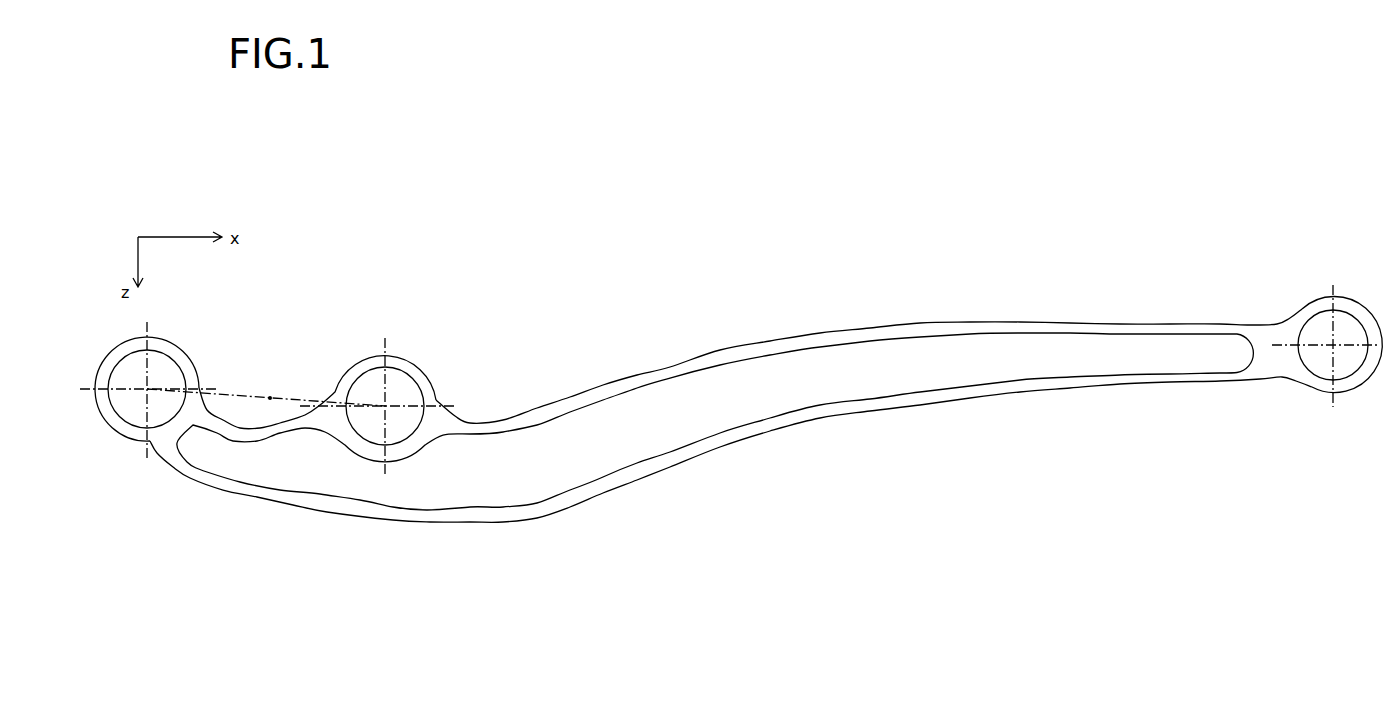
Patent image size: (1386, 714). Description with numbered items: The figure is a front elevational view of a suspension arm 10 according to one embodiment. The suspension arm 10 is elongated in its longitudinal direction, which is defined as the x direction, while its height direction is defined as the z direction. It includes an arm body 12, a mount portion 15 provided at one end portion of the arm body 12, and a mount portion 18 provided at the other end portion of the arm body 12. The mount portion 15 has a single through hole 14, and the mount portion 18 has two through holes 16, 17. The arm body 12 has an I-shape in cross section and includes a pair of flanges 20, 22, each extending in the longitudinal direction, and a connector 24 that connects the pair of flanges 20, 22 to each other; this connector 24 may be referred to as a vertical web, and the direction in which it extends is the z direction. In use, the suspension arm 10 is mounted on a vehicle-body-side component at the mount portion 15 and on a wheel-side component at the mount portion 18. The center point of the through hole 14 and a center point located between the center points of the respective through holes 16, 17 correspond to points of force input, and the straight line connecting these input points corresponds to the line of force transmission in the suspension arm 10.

The suspension arm 10 is at (692, 272).
The arm body 12 is at (570, 385).
The through hole 14 is at (1298, 332).
The mount portion 15 is at (1316, 280).
The through hole 16 is at (167, 362).
The through hole 17 is at (408, 388).
The mount portion 18 is at (263, 348).
The flange 20 is at (782, 345).
The flange 22 is at (658, 470).
The connector 24 is at (653, 408).